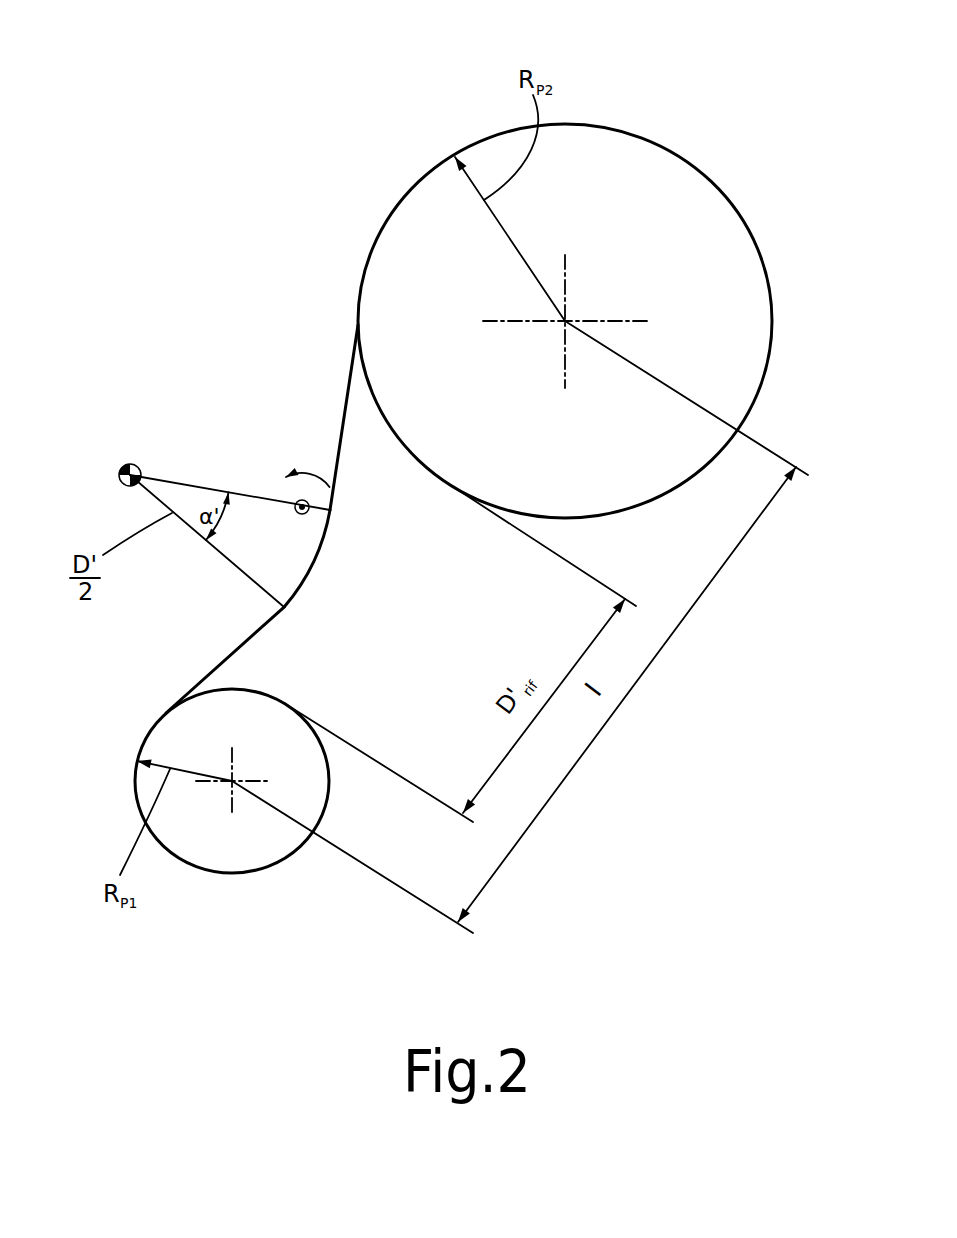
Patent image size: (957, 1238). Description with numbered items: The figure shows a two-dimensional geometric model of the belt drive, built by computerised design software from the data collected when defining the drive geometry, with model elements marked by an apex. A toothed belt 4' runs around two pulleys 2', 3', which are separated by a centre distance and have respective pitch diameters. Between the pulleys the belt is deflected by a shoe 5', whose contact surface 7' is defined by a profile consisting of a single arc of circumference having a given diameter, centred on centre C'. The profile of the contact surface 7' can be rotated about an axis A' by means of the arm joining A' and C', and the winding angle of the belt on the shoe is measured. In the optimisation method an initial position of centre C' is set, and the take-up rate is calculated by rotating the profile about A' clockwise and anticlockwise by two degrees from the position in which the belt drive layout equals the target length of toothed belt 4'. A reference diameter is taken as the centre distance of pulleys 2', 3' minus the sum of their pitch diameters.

The pulley 2' is at (232, 815).
The pulley 3' is at (612, 321).
The toothed belt 4' is at (301, 417).
The shoe 5' is at (221, 660).
The contact surface 7' is at (348, 569).
The centre C' is at (124, 444).
The axis A' is at (273, 474).